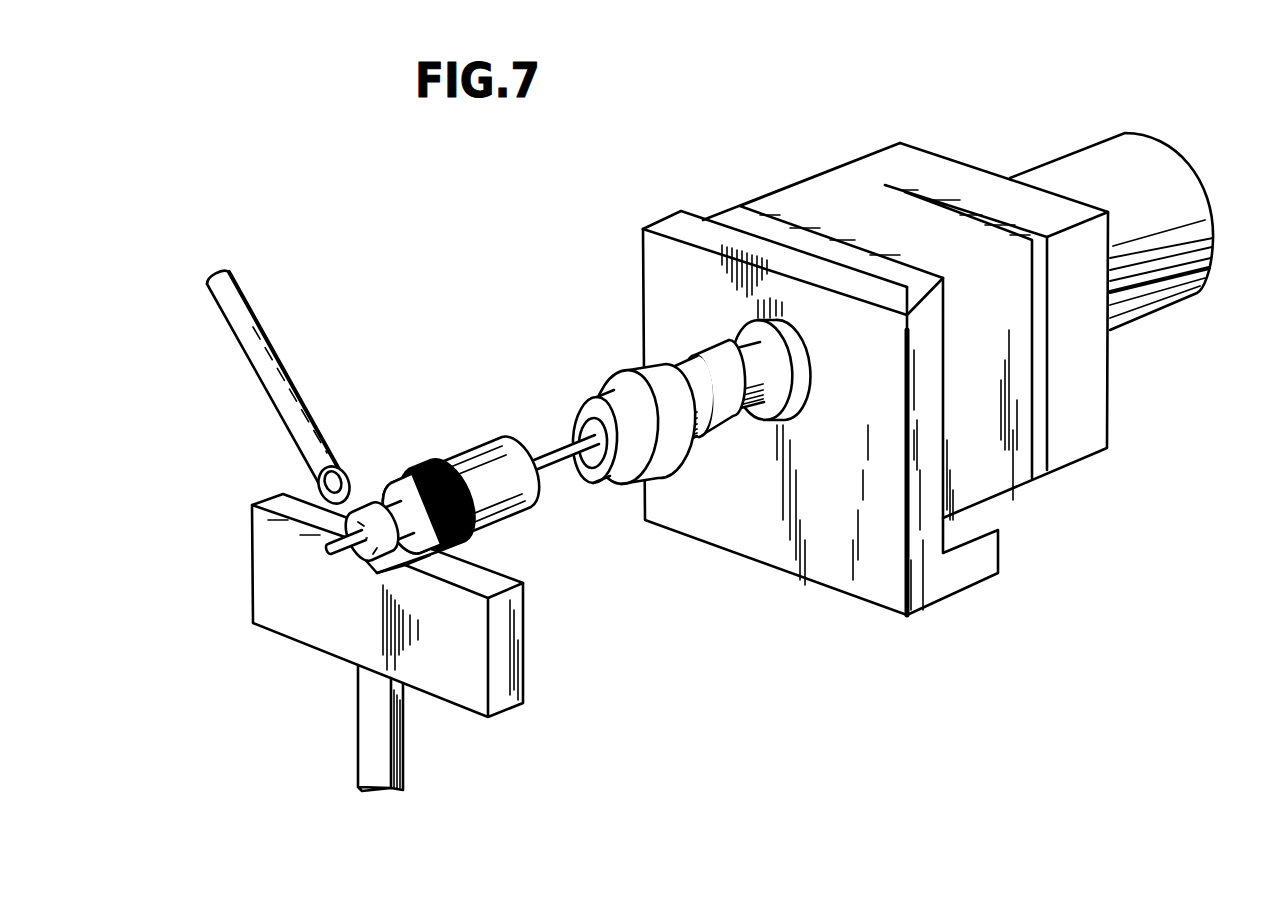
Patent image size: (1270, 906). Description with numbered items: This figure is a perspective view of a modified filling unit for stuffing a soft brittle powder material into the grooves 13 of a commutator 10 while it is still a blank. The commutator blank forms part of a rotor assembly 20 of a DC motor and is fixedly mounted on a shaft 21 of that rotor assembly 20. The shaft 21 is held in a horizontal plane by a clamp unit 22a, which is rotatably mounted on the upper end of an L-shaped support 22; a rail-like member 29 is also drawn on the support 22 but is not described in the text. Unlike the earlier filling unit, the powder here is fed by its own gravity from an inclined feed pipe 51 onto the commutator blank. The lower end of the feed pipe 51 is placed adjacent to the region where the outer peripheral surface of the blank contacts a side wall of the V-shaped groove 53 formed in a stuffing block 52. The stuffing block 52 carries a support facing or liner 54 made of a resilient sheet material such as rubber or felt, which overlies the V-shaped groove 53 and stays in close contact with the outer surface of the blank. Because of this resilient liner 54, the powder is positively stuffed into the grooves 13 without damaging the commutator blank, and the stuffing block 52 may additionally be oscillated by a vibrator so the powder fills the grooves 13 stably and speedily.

The commutator 10 is at (362, 507).
The grooves 13 is at (462, 530).
The rotor assembly 20 is at (453, 433).
The shaft 21 is at (558, 463).
The L-shaped support 22 is at (871, 588).
The clamp unit 22a is at (622, 357).
The guide rail 29 is at (878, 162).
The feed pipe 51 is at (246, 350).
The stuffing block 52 is at (510, 657).
The V-shaped groove 53 is at (330, 547).
The support liner 54 is at (384, 575).